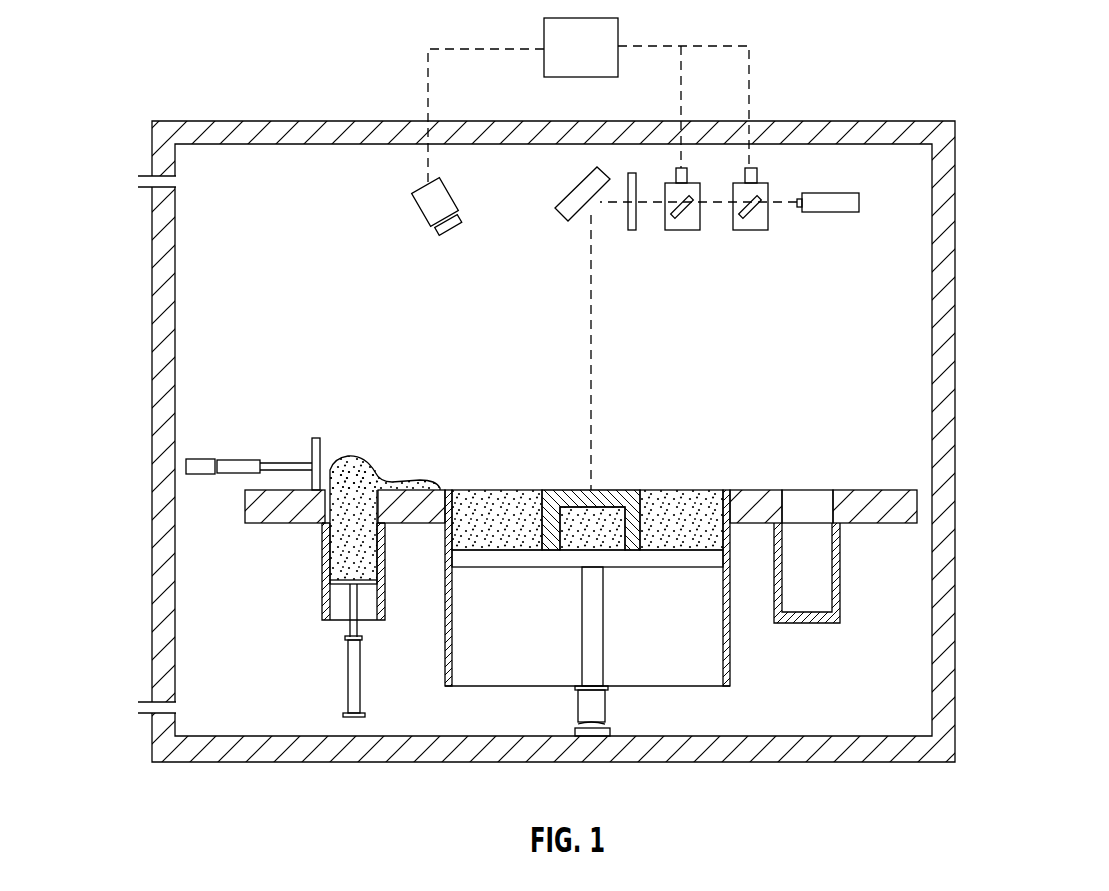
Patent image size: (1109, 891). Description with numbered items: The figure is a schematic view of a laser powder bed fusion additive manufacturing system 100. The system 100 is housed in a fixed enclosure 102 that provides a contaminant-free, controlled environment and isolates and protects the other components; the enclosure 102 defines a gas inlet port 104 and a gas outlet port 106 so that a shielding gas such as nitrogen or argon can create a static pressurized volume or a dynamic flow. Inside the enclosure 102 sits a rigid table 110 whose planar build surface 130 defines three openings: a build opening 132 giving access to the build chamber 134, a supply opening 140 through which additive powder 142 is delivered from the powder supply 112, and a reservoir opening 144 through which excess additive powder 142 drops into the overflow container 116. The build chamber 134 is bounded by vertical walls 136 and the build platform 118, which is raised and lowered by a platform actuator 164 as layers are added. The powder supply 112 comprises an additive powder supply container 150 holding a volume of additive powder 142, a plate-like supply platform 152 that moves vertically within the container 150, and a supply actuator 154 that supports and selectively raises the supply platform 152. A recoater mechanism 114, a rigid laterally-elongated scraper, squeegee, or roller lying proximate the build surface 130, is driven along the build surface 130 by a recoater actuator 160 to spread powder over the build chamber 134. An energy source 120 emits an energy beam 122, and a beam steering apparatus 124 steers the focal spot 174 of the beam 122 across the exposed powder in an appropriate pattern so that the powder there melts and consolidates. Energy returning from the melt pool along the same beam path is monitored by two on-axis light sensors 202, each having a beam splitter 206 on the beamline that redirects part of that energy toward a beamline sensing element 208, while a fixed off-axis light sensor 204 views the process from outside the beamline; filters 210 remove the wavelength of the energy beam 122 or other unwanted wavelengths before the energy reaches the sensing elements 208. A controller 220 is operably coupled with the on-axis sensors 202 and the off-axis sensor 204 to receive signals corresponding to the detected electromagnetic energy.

The DMLM system 100 is at (134, 230).
The enclosure 102 is at (362, 134).
The gas inlet port 104 is at (182, 186).
The gas outlet port 106 is at (180, 705).
The table 110 is at (858, 514).
The powder supply 112 is at (454, 555).
The recoater mechanism 114 is at (315, 437).
The overflow container 116 is at (780, 595).
The build platform 118 is at (482, 558).
The energy source 120 is at (842, 193).
The energy beam 122 is at (590, 340).
The beam steering apparatus 124 is at (575, 188).
The planar build surface 130 is at (649, 585).
The build opening 132 is at (650, 498).
The build chamber 134 is at (712, 647).
The vertical walls 136 is at (444, 657).
The supply opening 140 is at (375, 487).
The additive powder 142 is at (368, 465).
The reservoir opening 144 is at (833, 512).
The additive powder supply container 150 is at (388, 551).
The supply platform 152 is at (363, 583).
The supply actuator 154 is at (352, 671).
The recoater actuator 160 is at (250, 460).
The platform actuator 164 is at (604, 704).
The focal spot 174 is at (588, 489).
The on-axis light sensor 202 is at (668, 180).
The off-axis light sensor 204 is at (416, 208).
The beam splitter 206 is at (684, 214).
The beamline sensing element 208 is at (688, 196).
The filter 210 is at (633, 232).
The controller 220 is at (600, 60).